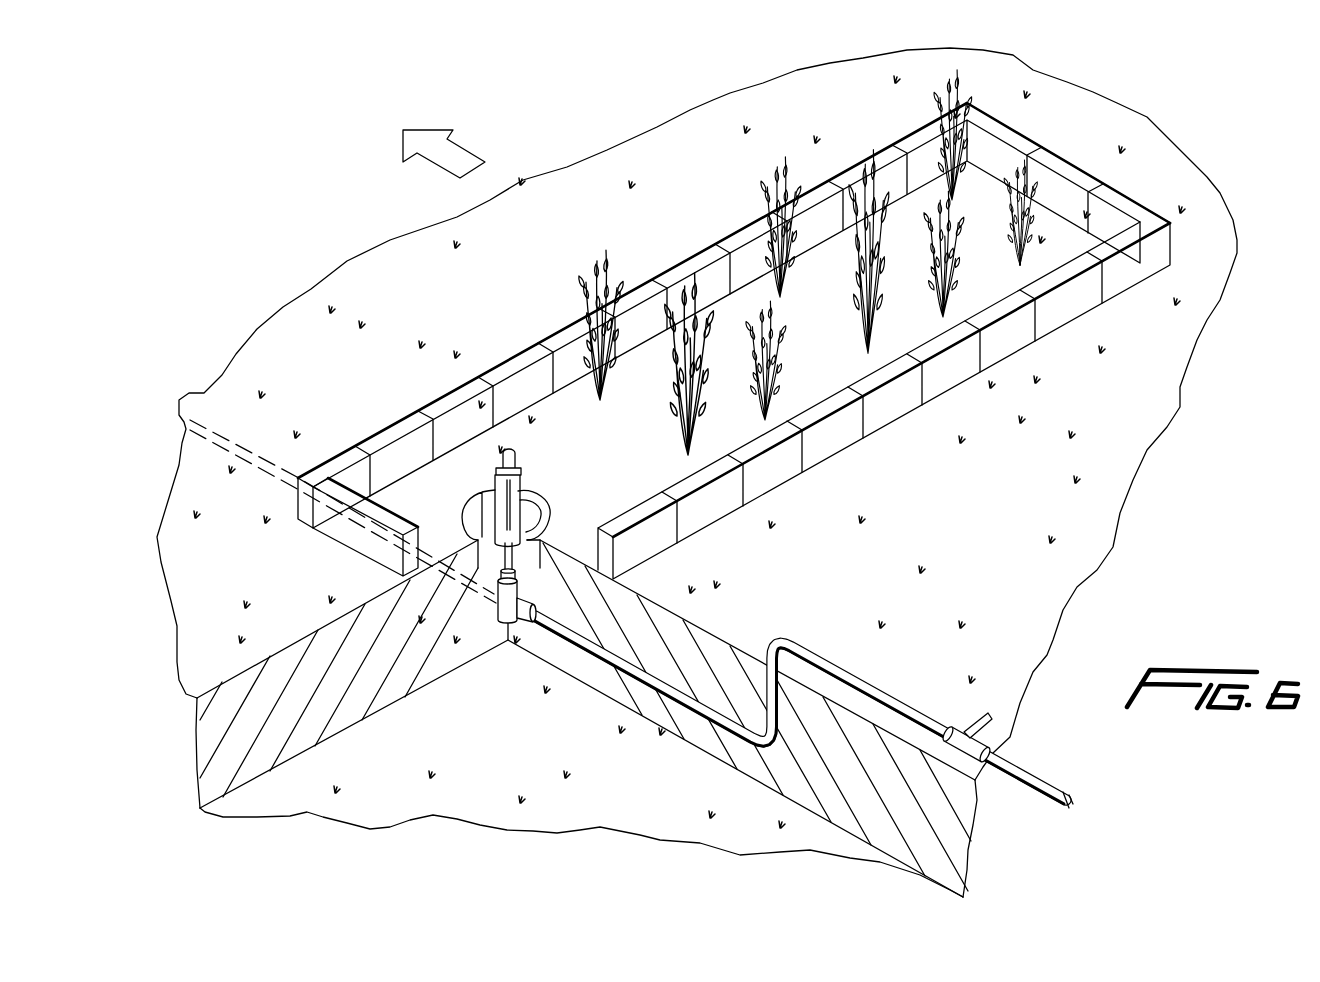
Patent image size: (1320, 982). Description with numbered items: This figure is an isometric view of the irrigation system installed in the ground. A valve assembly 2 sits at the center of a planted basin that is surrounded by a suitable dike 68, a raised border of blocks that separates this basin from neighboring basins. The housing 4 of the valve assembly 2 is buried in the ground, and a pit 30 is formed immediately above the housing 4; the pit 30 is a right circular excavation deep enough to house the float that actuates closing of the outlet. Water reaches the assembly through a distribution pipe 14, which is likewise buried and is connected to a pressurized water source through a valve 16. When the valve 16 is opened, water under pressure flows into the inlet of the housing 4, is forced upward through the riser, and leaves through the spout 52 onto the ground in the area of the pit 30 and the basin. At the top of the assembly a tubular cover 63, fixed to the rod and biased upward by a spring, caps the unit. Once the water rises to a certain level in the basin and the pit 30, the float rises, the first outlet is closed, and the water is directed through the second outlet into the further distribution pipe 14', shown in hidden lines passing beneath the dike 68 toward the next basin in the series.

The valve assembly 2 is at (510, 476).
The housing 4 is at (497, 600).
The distribution pipe 14 is at (803, 712).
The distribution pipe 14' is at (306, 511).
The valve 16 is at (965, 727).
The pit 30 is at (547, 524).
The spout 52 is at (527, 497).
The tubular cover 63 is at (512, 450).
The dike 68 is at (818, 456).